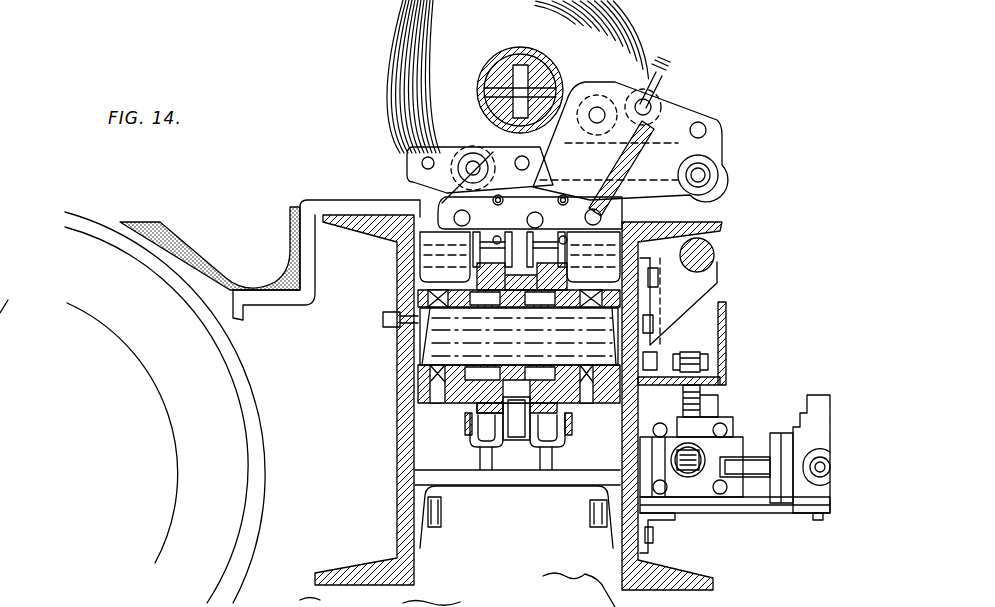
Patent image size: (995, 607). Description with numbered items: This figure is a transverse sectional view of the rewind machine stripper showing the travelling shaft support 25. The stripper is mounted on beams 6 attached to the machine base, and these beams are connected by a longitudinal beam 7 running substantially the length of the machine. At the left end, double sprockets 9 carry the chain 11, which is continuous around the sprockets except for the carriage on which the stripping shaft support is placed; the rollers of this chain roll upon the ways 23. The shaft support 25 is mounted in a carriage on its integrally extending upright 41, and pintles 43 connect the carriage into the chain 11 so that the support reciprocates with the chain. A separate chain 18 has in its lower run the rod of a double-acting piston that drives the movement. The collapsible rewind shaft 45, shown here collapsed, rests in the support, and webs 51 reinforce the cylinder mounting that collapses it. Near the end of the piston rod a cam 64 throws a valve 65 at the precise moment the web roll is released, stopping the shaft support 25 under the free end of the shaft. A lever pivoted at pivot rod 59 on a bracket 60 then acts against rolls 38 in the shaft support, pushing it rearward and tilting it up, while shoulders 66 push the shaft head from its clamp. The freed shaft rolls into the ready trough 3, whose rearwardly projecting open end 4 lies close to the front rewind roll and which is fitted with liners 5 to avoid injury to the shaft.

The ready trough 3 is at (307, 267).
The rearwardly projecting open end 4 is at (133, 222).
The liners 5 is at (288, 253).
The beams 6 is at (395, 507).
The beam 7 is at (463, 480).
The double sprockets 9 is at (477, 400).
The chain 11 is at (518, 432).
The chain 18 is at (694, 405).
The ways 23 is at (487, 445).
The shaft support 25 is at (678, 101).
The rolls 38 is at (713, 198).
The upright 41 is at (430, 213).
The pintles 43 is at (624, 216).
The rewind shaft 45 is at (493, 63).
The webs 51 is at (550, 603).
The pivot rod 59 is at (713, 246).
The brackets 60 is at (700, 280).
The cam 64 is at (737, 443).
The valve 65 is at (813, 500).
The shoulders 66 is at (553, 133).